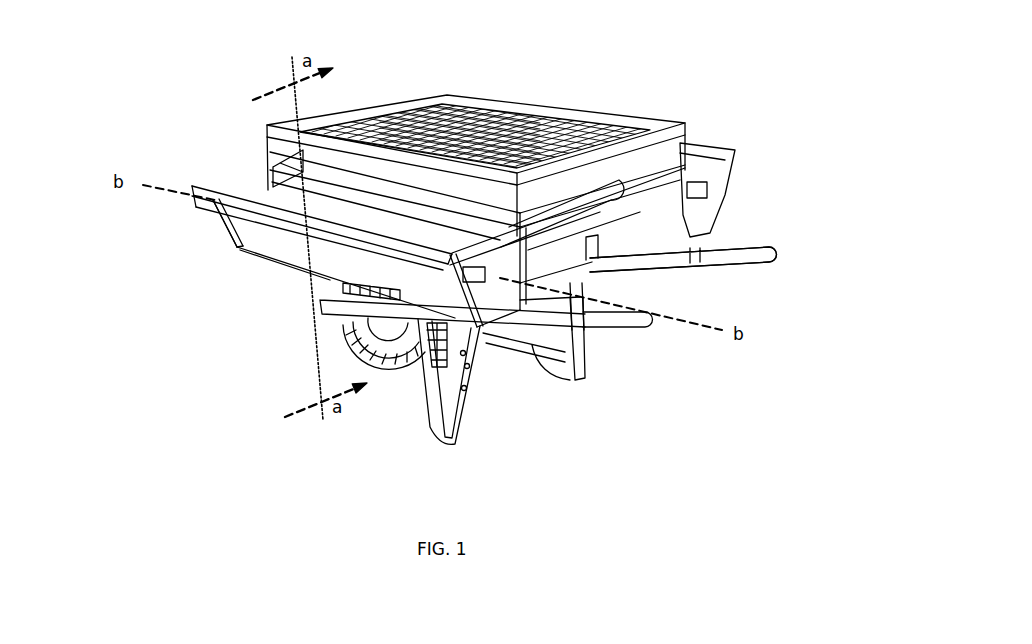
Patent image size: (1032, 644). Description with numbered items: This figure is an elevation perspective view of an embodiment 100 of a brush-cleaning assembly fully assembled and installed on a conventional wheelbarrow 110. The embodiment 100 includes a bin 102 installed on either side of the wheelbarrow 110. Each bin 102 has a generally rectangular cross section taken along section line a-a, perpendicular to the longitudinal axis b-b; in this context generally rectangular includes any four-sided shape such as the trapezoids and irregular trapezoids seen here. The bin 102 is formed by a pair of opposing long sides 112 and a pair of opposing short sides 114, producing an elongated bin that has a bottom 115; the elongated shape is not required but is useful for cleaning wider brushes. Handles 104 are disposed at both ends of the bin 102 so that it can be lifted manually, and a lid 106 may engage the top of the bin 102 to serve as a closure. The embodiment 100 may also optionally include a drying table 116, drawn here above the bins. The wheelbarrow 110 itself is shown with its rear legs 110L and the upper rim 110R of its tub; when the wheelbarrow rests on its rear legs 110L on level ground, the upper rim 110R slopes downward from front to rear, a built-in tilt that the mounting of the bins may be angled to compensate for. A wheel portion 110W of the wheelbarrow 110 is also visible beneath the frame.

The embodiment 100 is at (918, 52).
The bin 102 is at (707, 205).
The handle 104 is at (723, 177).
The lid 106 is at (260, 185).
The wheelbarrow 110 is at (597, 250).
The rear legs 110L is at (460, 428).
The upper rim 110R is at (593, 223).
The frame cross member 110W is at (592, 200).
The long sides 112 is at (288, 257).
The short sides 114 is at (203, 219).
The bottom 115 is at (305, 292).
The drying table 116 is at (577, 128).